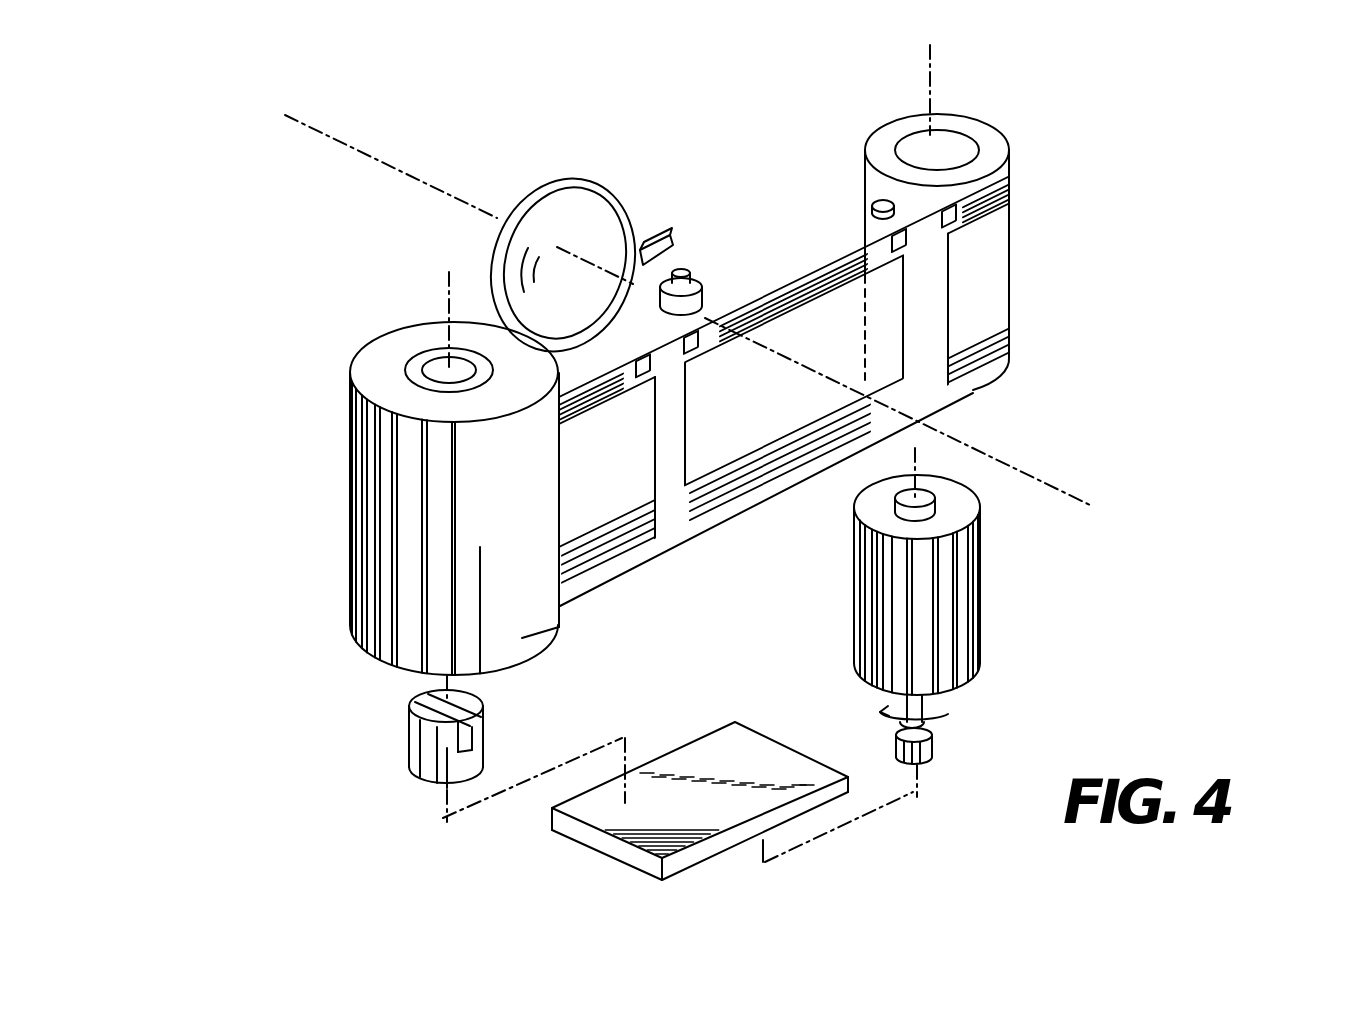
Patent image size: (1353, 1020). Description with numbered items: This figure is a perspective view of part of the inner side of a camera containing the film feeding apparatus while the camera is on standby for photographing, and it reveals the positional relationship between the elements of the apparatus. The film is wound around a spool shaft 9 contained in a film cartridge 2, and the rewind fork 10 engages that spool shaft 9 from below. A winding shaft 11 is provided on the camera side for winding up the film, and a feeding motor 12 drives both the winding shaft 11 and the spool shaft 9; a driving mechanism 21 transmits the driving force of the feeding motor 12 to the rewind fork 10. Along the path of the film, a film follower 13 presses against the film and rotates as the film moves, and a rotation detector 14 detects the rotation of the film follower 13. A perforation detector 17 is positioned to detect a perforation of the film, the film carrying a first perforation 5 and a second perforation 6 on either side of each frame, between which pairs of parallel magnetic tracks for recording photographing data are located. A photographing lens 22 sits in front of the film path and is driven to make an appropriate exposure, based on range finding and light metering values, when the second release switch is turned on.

The film cartridge 2 is at (383, 542).
The first perforation 5 is at (907, 232).
The second perforation 6 is at (705, 330).
The spool shaft 9 is at (440, 362).
The rewind fork 10 is at (413, 750).
The winding shaft 11 is at (935, 138).
The feeding motor 12 is at (982, 660).
The film follower 13 is at (698, 285).
The rotation detector 14 is at (668, 238).
The perforation detector 17 is at (878, 203).
The driving mechanism 21 is at (717, 733).
The photographing lens 22 is at (585, 205).